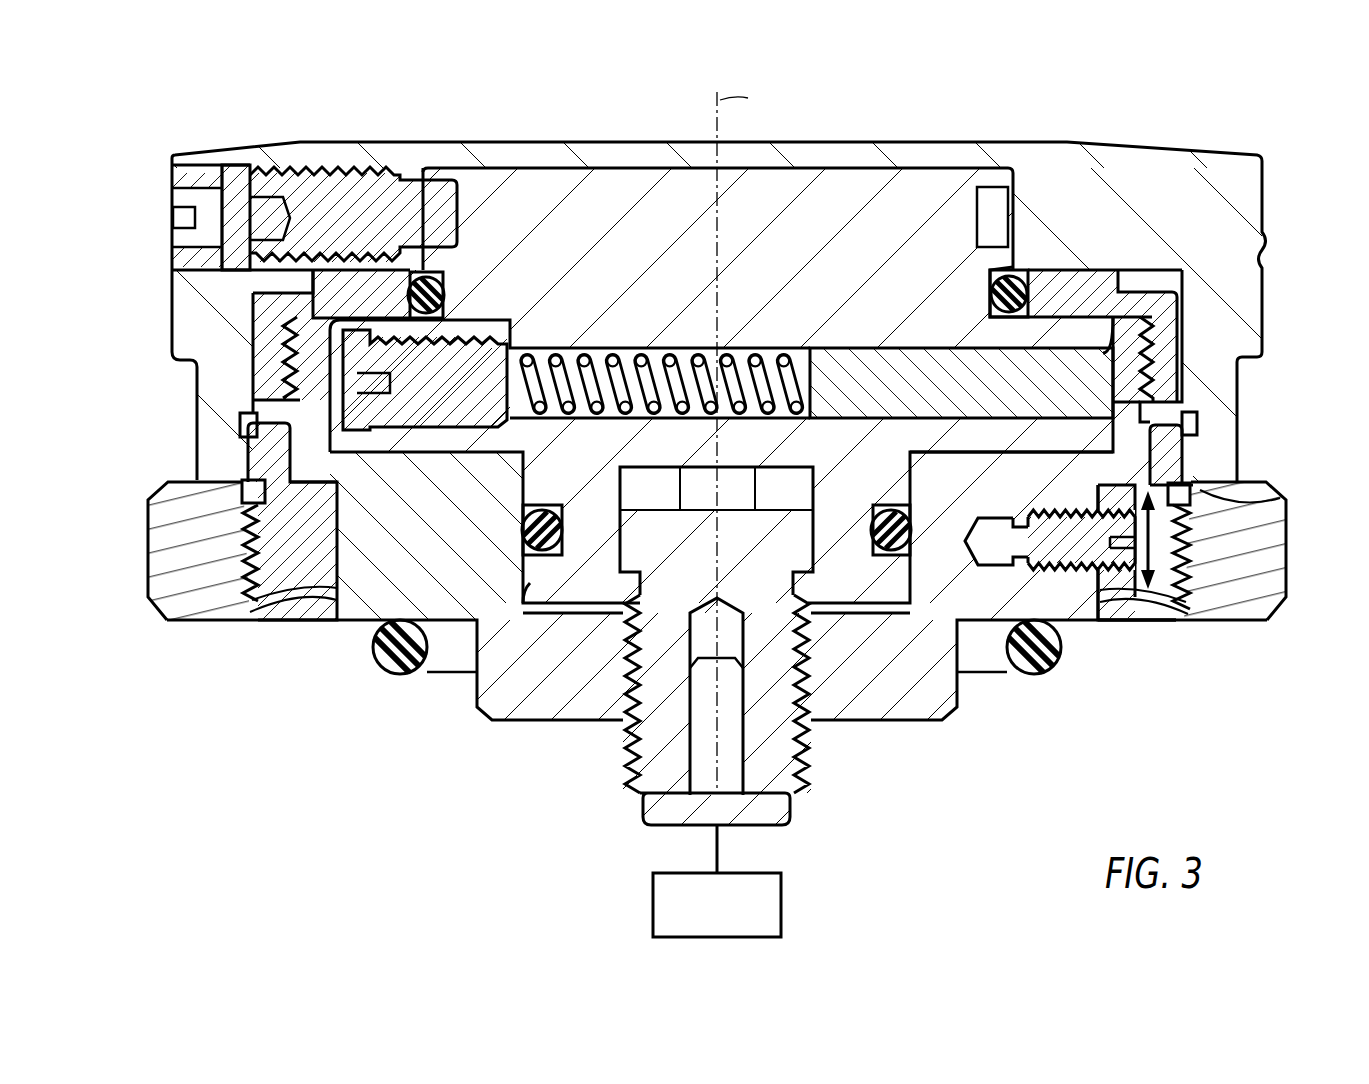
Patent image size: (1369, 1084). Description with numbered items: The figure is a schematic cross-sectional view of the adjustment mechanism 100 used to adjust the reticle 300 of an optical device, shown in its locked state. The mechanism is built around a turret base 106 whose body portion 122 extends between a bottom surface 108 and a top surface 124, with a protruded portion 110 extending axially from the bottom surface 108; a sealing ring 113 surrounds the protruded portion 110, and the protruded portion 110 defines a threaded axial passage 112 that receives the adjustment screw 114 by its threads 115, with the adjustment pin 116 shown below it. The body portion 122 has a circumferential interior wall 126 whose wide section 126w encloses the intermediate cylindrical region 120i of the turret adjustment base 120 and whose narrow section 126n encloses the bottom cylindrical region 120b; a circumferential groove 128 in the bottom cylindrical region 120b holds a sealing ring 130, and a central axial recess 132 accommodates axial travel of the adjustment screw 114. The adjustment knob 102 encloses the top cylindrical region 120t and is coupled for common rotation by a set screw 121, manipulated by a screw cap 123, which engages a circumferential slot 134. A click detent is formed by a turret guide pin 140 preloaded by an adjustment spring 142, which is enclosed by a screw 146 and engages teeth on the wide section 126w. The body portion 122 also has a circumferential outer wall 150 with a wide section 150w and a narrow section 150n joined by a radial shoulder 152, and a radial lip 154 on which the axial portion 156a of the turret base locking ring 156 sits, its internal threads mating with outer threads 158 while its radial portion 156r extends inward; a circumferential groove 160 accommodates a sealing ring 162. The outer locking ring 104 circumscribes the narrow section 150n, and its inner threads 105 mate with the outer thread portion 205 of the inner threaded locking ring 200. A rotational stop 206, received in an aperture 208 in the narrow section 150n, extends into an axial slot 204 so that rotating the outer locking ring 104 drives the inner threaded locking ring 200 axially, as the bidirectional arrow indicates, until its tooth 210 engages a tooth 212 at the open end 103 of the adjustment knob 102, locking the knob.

The adjustment mechanism 100 is at (82, 120).
The adjustment knob 102 is at (245, 162).
The open end 103 is at (1205, 500).
The outer locking ring 104 is at (208, 597).
The inner threads 105 is at (1205, 593).
The turret base 106 is at (470, 720).
The bottom surface 108 is at (357, 622).
The protruded portion 110 is at (928, 713).
The threaded axial passage 112 is at (633, 775).
The sealing ring 113 is at (393, 650).
The adjustment screw 114 is at (770, 765).
The threads 115 is at (625, 627).
The adjustment pin 116 is at (765, 815).
The turret adjustment base 120 is at (862, 186).
The top cylindrical region 120t is at (932, 186).
The intermediate cylindrical region 120i is at (1075, 343).
The bottom cylindrical region 120b is at (838, 585).
The set screw 121 is at (332, 200).
The body portion 122 is at (1068, 600).
The screw cap 123 is at (188, 207).
The top surface 124 is at (1135, 170).
The circumferential interior wall 126 is at (300, 543).
The wide section 126w is at (325, 352).
The narrow section 126n is at (525, 620).
The circumferential groove 128 is at (880, 525).
The sealing ring 130 is at (540, 525).
The central axial recess 132 is at (625, 500).
The circumferential slot 134 is at (440, 190).
The turret guide pin 140 is at (848, 370).
The adjustment spring 142 is at (603, 363).
The screw 146 is at (455, 362).
The circumferential outer wall 150 is at (187, 566).
The wide section 150w is at (270, 462).
The narrow section 150n is at (270, 595).
The radial shoulder 152 is at (303, 490).
The radial lip 154 is at (245, 410).
The turret base locking ring 156 is at (1197, 236).
The radial portion 156r is at (1070, 292).
The axial portion 156a is at (1165, 378).
The outer threads 158 is at (1155, 368).
The circumferential groove 160 is at (440, 292).
The sealing ring 162 is at (1008, 300).
The inner threaded locking ring 200 is at (290, 520).
The axial slot 204 is at (1112, 592).
The outer thread portion 205 is at (1195, 550).
The rotational stop 206 is at (1095, 602).
The aperture 208 is at (1000, 535).
The tooth 210 is at (1190, 478).
The tooth 212 is at (1195, 440).
The reticle 300 is at (655, 890).